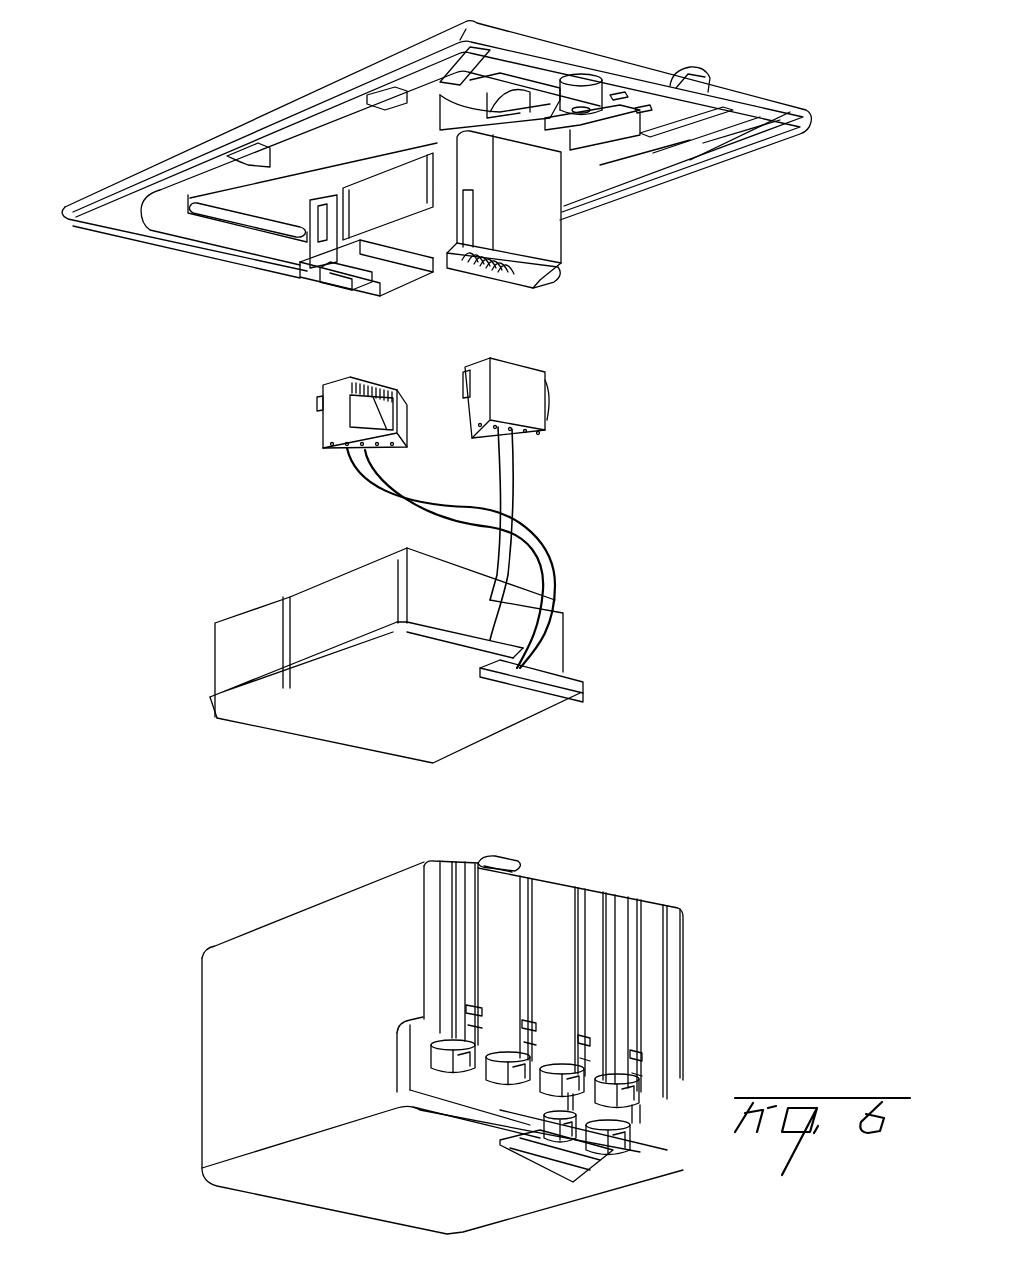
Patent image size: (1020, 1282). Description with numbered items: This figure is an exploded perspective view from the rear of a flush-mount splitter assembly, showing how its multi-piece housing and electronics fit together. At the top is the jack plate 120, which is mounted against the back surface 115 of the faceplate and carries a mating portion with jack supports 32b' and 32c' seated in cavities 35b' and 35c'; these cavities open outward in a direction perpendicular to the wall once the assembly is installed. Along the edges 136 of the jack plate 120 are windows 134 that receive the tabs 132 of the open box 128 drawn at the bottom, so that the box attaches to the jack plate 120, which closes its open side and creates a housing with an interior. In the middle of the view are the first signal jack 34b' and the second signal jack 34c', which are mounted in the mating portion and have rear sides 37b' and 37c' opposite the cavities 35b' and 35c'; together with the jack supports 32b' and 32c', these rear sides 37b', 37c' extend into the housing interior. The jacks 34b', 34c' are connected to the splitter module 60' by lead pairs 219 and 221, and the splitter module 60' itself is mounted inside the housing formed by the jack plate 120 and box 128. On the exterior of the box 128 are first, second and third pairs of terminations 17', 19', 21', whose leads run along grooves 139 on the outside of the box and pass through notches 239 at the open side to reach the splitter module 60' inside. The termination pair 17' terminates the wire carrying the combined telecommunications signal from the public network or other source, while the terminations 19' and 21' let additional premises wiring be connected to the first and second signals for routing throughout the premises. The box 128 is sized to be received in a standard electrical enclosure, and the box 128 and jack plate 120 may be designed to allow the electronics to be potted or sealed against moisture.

The back surface 115 is at (747, 125).
The edges 136 is at (215, 215).
The jack plate 120 is at (633, 167).
The windows 134 is at (460, 90).
The jack support 32b' is at (286, 247).
The cavity 35b' is at (296, 312).
The jack support 32c' is at (567, 209).
The cavity 35c' is at (540, 295).
The first signal jack 34b' is at (301, 412).
The rear side 37b' is at (386, 555).
The second signal jack 34c' is at (583, 398).
The rear side 37c' is at (593, 533).
The lead pair 221 is at (517, 485).
The lead pair 219 is at (560, 590).
The splitter module 60' is at (330, 655).
The open box 128 is at (253, 1042).
The notches 239 is at (525, 903).
The grooves 139 is at (525, 938).
The tabs 132 is at (508, 852).
The first pair of terminations 17' is at (459, 1108).
The third pair of terminations 21' is at (673, 1066).
The second pair of terminations 19' is at (613, 1166).